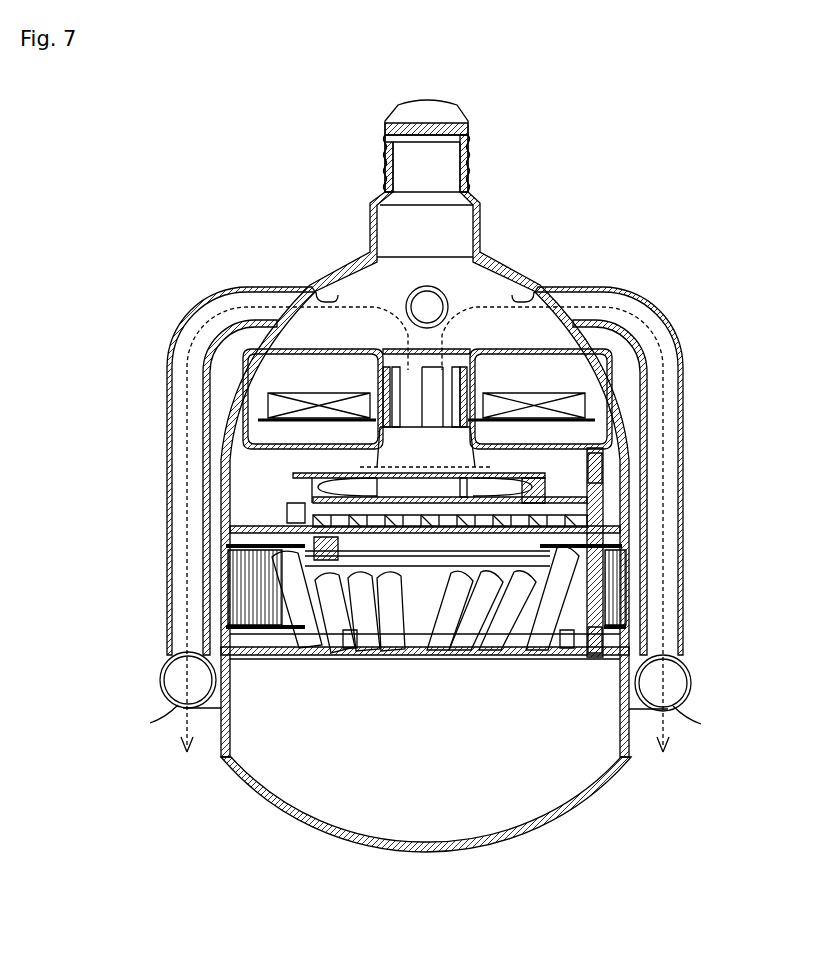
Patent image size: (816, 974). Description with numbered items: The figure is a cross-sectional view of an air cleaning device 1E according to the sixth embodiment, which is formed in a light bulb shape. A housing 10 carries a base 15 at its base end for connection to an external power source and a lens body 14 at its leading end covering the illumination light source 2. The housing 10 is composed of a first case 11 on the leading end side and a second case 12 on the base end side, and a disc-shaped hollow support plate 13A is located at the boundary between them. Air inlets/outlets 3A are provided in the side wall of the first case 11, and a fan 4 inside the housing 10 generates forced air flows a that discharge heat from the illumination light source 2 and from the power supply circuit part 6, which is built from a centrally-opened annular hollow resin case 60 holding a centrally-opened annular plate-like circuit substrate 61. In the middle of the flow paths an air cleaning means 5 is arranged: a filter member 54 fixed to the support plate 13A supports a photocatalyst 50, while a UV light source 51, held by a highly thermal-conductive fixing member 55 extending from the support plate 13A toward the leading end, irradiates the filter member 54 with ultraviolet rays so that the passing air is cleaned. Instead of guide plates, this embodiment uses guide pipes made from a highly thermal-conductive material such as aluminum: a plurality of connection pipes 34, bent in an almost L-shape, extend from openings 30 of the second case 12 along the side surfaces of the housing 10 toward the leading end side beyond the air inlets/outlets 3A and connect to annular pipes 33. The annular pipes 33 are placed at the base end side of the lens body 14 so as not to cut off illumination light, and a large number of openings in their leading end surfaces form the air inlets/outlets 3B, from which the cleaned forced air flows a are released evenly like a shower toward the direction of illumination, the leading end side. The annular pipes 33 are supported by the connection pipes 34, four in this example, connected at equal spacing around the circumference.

The air cleaning device 1E is at (518, 184).
The base 15 is at (392, 128).
The housing 10 is at (633, 427).
The openings 30 is at (335, 270).
The connection pipes 34 is at (169, 363).
The second case 12 is at (612, 368).
The annular pipes 33 is at (692, 683).
The air inlets/outlets 3B is at (166, 715).
The power supply circuit part 6 is at (118, 378).
The resin case 60 is at (266, 400).
The circuit substrate 61 is at (293, 421).
The fan 4 is at (310, 480).
The filter member 54 is at (605, 505).
The air cleaning means 5 is at (421, 604).
The photocatalyst 50 is at (612, 527).
The UV light source 51 is at (312, 546).
The support plate 13A is at (300, 520).
The air inlets/outlets 3A is at (240, 561).
The forced air flows a is at (190, 603).
The fixing member 55 is at (490, 656).
The first case 11 is at (636, 642).
The illumination light source 2 is at (430, 668).
The lens body 14 is at (448, 853).